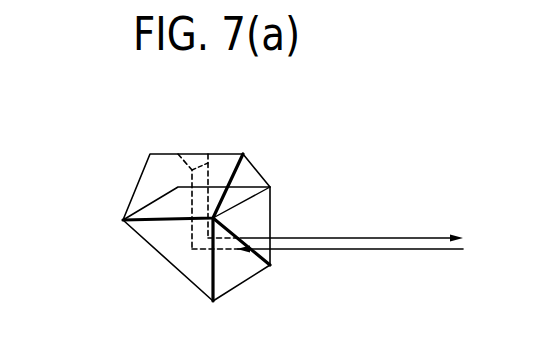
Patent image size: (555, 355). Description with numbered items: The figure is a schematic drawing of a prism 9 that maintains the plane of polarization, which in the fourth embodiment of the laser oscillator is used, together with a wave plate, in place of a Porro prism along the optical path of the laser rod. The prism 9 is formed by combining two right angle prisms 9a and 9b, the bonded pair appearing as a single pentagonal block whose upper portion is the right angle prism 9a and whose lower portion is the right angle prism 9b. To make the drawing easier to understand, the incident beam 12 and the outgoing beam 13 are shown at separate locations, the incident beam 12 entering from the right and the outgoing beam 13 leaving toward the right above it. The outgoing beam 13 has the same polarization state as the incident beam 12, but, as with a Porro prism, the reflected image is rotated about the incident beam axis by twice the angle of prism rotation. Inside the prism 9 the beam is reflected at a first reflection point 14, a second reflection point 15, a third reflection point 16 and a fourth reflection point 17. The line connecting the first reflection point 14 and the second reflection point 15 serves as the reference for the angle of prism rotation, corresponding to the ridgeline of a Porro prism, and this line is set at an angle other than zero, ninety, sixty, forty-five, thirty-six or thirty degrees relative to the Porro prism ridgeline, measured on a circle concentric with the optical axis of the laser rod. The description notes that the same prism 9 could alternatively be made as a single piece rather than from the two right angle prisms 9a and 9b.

The prism 9 is at (83, 187).
The right angle prism 9a is at (152, 181).
The right angle prism 9b is at (148, 232).
The incident beam 12 is at (383, 252).
The outgoing beam 13 is at (380, 237).
The first reflection point 14 is at (190, 255).
The second reflection point 15 is at (192, 168).
The third reflection point 16 is at (208, 155).
The fourth reflection point 17 is at (224, 231).